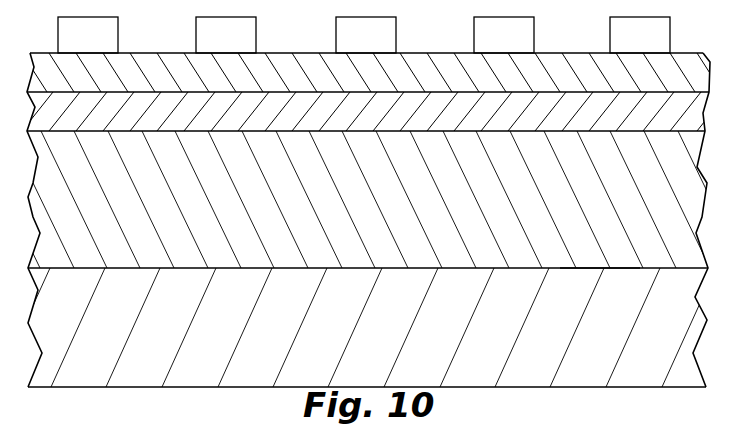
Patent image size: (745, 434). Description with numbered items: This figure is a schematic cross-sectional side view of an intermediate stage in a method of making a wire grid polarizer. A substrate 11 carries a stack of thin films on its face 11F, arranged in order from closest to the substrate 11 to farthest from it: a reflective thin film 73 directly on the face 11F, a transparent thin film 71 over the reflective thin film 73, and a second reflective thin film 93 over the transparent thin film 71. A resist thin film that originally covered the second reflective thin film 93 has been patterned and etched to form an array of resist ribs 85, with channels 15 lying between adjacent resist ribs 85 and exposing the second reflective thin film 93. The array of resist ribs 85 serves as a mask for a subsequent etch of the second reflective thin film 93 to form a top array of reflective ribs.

The resist ribs 85 is at (75, 48).
The channels 15 is at (365, 33).
The second reflective thin film 93 is at (361, 86).
The transparent thin film 71 is at (362, 124).
The reflective thin film 73 is at (364, 213).
The substrate 11 is at (359, 338).
The face of the substrate 11F is at (597, 270).